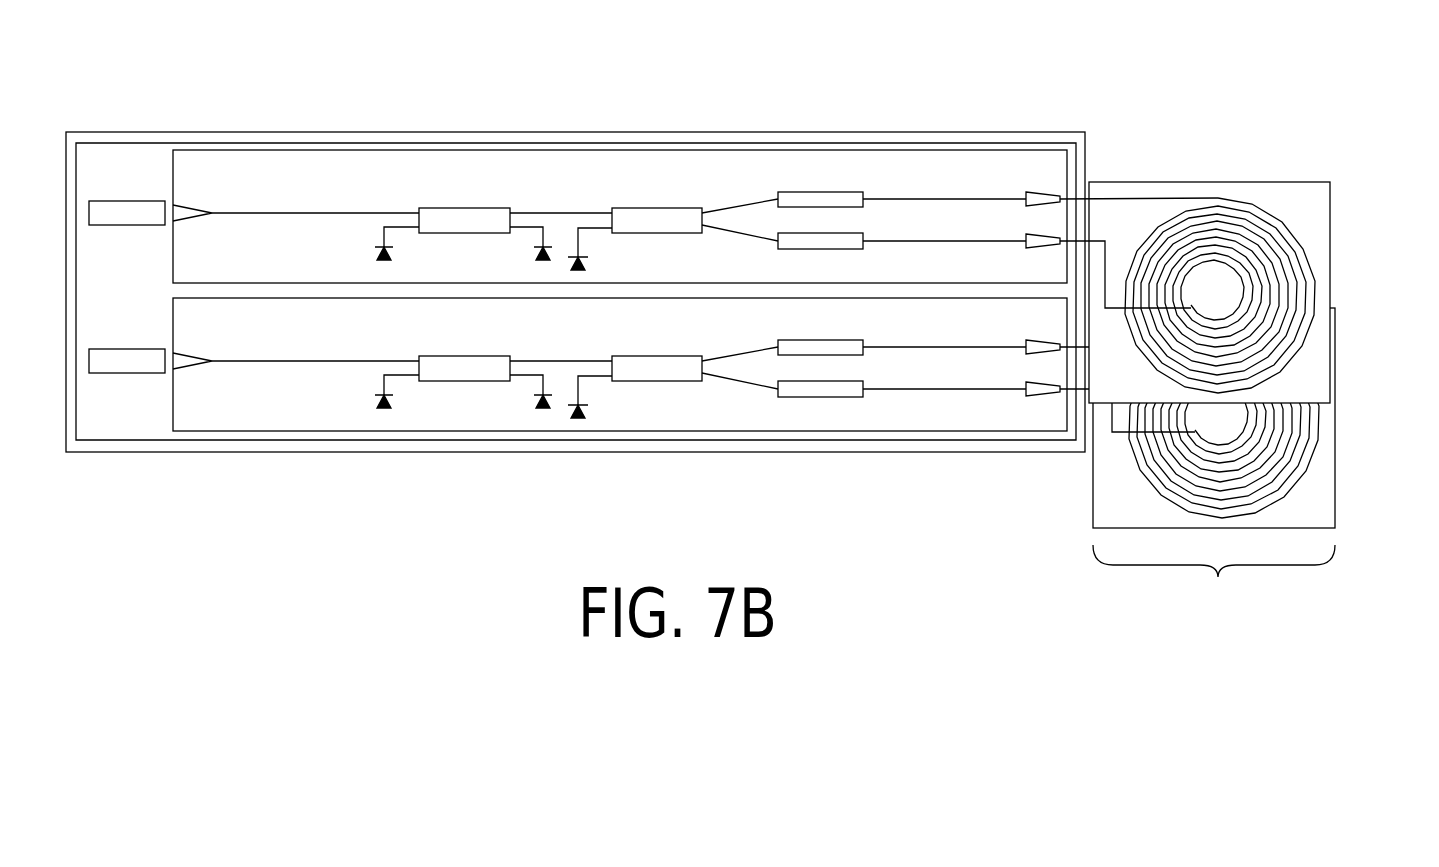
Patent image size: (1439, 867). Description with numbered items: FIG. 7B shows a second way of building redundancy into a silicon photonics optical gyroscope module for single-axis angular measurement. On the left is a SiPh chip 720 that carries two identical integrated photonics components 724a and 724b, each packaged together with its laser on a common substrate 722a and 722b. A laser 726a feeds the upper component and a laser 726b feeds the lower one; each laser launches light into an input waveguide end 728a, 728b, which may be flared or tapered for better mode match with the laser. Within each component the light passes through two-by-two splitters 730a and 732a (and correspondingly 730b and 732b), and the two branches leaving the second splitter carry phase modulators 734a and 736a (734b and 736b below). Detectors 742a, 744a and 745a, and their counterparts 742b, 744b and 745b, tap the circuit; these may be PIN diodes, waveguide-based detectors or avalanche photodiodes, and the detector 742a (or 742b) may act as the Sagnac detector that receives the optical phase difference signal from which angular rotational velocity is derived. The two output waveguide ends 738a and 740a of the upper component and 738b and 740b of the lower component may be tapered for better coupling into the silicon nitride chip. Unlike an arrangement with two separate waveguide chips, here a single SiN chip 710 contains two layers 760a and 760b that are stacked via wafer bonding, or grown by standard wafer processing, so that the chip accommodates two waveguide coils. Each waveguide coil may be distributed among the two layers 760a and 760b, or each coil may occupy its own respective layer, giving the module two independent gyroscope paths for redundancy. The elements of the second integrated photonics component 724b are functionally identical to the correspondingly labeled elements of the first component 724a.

The SiN chip 710 is at (1214, 583).
The SiPh chip 720 is at (309, 132).
The common substrate 722a is at (420, 143).
The common substrate 722b is at (420, 440).
The integrated photonics component 724a is at (528, 150).
The integrated photonics component 724b is at (527, 432).
The laser 726a is at (122, 201).
The laser 726b is at (127, 442).
The input waveguide end 728a is at (200, 210).
The input waveguide end 728b is at (202, 444).
The 2×2 splitter 730a is at (475, 208).
The 2×2 splitter 730b is at (451, 345).
The 2×2 splitter 732a is at (642, 208).
The 2×2 splitter 732b is at (669, 345).
The phase modulator 734a is at (855, 192).
The phase modulator 734b is at (852, 329).
The phase modulator 736a is at (855, 249).
The phase modulator 736b is at (852, 406).
The output waveguide end 738a is at (1032, 192).
The output waveguide end 738b is at (1018, 328).
The output waveguide end 740a is at (1032, 248).
The output waveguide end 740b is at (1018, 406).
The detector 742a is at (378, 251).
The detector 742b is at (353, 400).
The detector 744a is at (540, 251).
The detector 744b is at (500, 400).
The detector 745a is at (582, 264).
The detector 745b is at (620, 401).
The layer 760a is at (1322, 211).
The layer 760b is at (1322, 500).